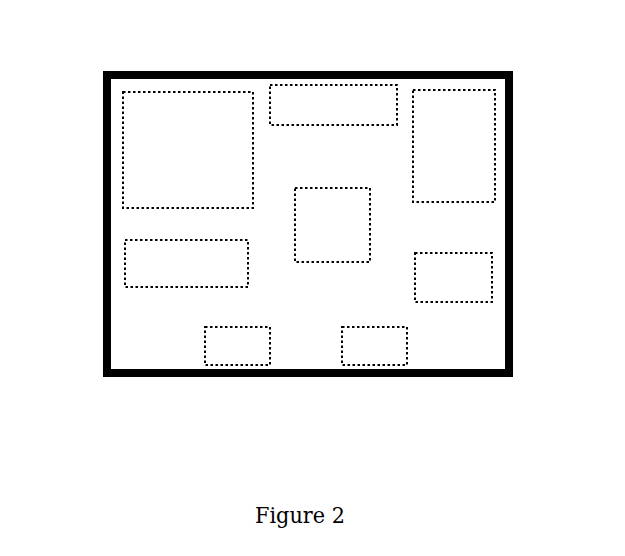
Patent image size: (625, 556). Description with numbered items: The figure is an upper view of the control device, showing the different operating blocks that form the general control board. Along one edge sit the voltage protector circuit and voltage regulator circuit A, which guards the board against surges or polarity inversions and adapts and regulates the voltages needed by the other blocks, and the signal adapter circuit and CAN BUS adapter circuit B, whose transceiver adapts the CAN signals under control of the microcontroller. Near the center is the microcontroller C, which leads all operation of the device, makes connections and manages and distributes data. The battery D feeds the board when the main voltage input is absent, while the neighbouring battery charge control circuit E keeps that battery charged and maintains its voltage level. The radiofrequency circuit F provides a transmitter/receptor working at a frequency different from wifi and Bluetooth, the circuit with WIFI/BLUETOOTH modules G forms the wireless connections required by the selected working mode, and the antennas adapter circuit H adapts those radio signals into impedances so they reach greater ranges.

The voltage protector circuit and voltage regulator circuit A is at (235, 347).
The signal adapter circuit and CAN BUS adapter circuit B is at (368, 342).
The microcontroller C is at (332, 225).
The battery D is at (458, 150).
The battery charge control circuit E is at (453, 277).
The radiofrequency circuit F is at (180, 263).
The circuit with WIFI/BLUETOOTH modules G is at (188, 152).
The antennas adapter circuit H is at (334, 103).